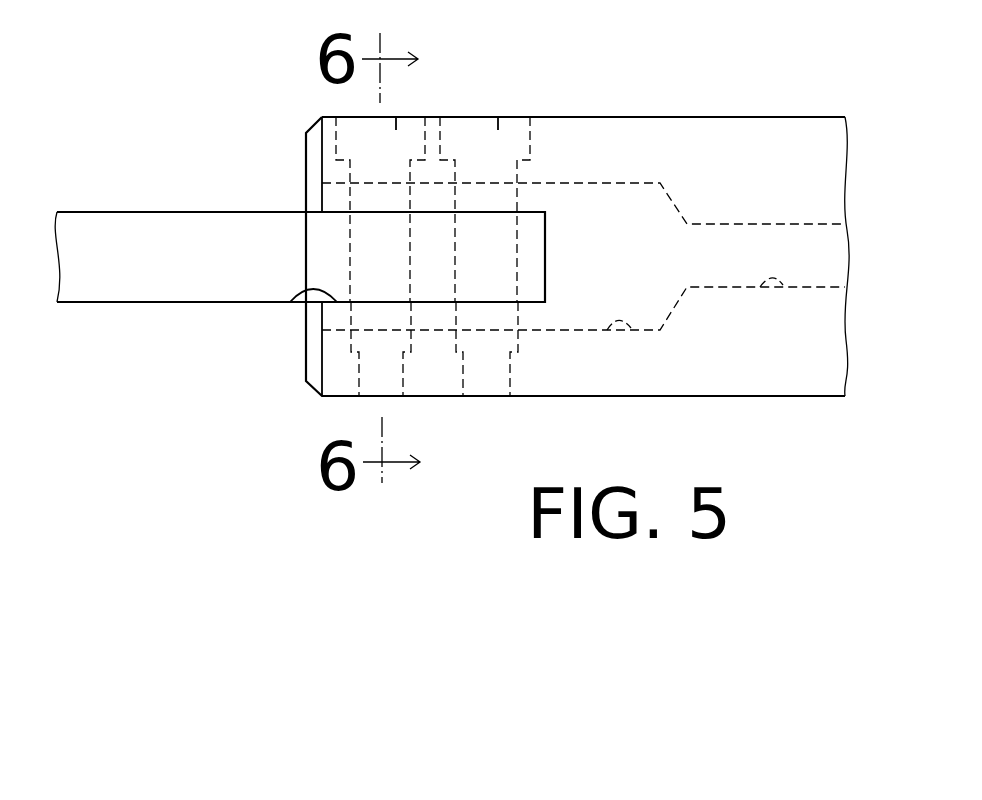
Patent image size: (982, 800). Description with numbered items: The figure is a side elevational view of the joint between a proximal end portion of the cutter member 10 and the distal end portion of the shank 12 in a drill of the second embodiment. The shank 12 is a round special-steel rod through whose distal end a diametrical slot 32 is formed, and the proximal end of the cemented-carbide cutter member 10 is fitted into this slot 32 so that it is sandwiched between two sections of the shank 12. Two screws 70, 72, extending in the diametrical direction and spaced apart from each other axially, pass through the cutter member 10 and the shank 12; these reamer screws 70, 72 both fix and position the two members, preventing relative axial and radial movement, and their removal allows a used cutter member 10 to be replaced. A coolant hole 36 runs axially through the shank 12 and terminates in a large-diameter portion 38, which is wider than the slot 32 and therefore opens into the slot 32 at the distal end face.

The cutter member 10 is at (207, 232).
The shank 12 is at (742, 132).
The slot 32 is at (297, 300).
The coolant hole 36 is at (785, 287).
The large-diameter portion 38 is at (633, 330).
The screw 70 is at (397, 112).
The screw 72 is at (498, 112).